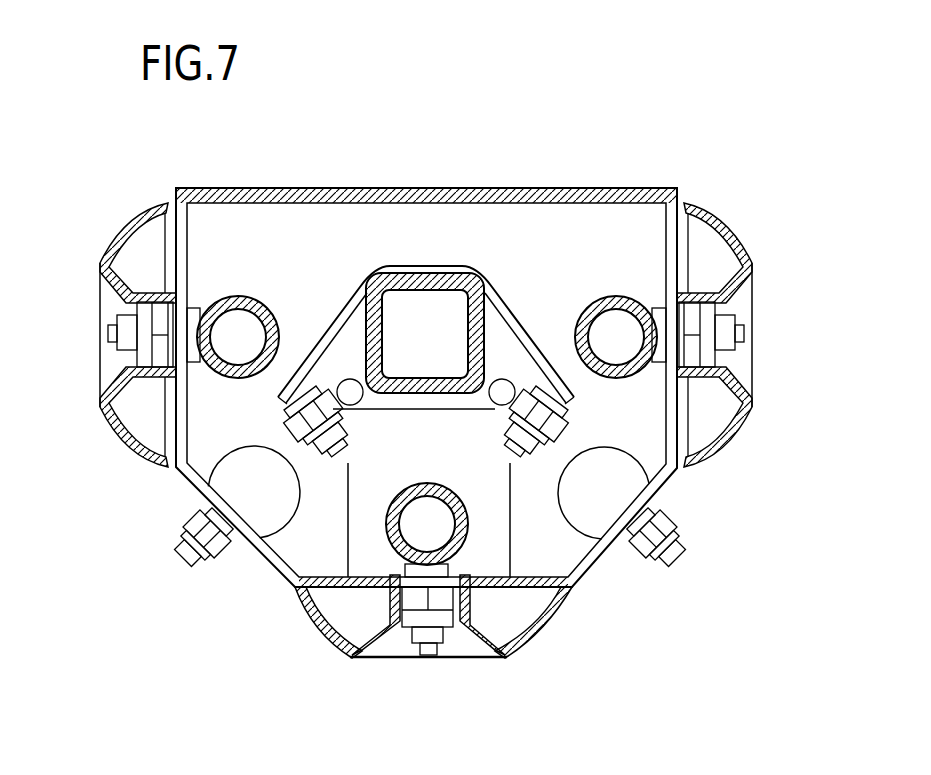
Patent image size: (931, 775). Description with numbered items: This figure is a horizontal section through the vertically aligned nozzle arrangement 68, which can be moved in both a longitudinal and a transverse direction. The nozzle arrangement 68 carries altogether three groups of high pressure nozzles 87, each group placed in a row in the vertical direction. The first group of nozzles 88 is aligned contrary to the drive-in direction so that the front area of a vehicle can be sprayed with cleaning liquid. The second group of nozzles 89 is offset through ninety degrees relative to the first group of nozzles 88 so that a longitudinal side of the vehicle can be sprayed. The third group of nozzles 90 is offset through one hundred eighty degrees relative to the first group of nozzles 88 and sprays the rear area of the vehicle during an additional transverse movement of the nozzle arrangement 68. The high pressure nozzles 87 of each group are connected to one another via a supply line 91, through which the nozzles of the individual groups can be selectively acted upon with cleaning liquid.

The nozzle arrangement 68 is at (485, 178).
The high pressure nozzle 87 is at (108, 333).
The first group of nozzles 88 is at (768, 408).
The second group of nozzles 89 is at (477, 692).
The third group of nozzles 90 is at (92, 430).
The supply line 91 is at (268, 309).